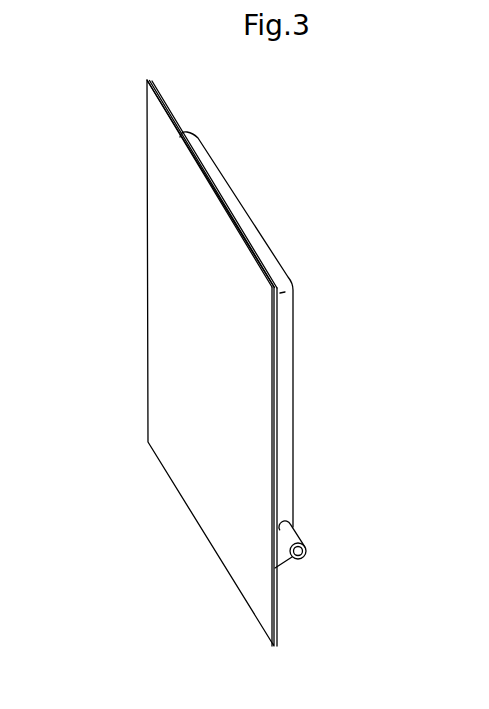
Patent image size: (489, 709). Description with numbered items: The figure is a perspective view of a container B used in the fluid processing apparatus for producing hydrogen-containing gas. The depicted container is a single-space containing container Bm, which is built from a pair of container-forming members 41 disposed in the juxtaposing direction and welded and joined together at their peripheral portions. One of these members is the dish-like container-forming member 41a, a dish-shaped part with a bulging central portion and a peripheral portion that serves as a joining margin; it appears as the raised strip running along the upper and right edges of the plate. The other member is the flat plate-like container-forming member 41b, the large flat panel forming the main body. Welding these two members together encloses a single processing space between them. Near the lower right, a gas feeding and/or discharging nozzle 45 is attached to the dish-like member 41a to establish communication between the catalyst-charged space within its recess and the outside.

The single-space containing container Bm is at (252, 158).
The container B is at (212, 363).
The container-forming member 41 is at (212, 363).
The dish-like container-forming member 41a is at (243, 215).
The flat plate-like container-forming member 41b is at (182, 242).
The gas feeding and/or discharging nozzle 45 is at (294, 531).